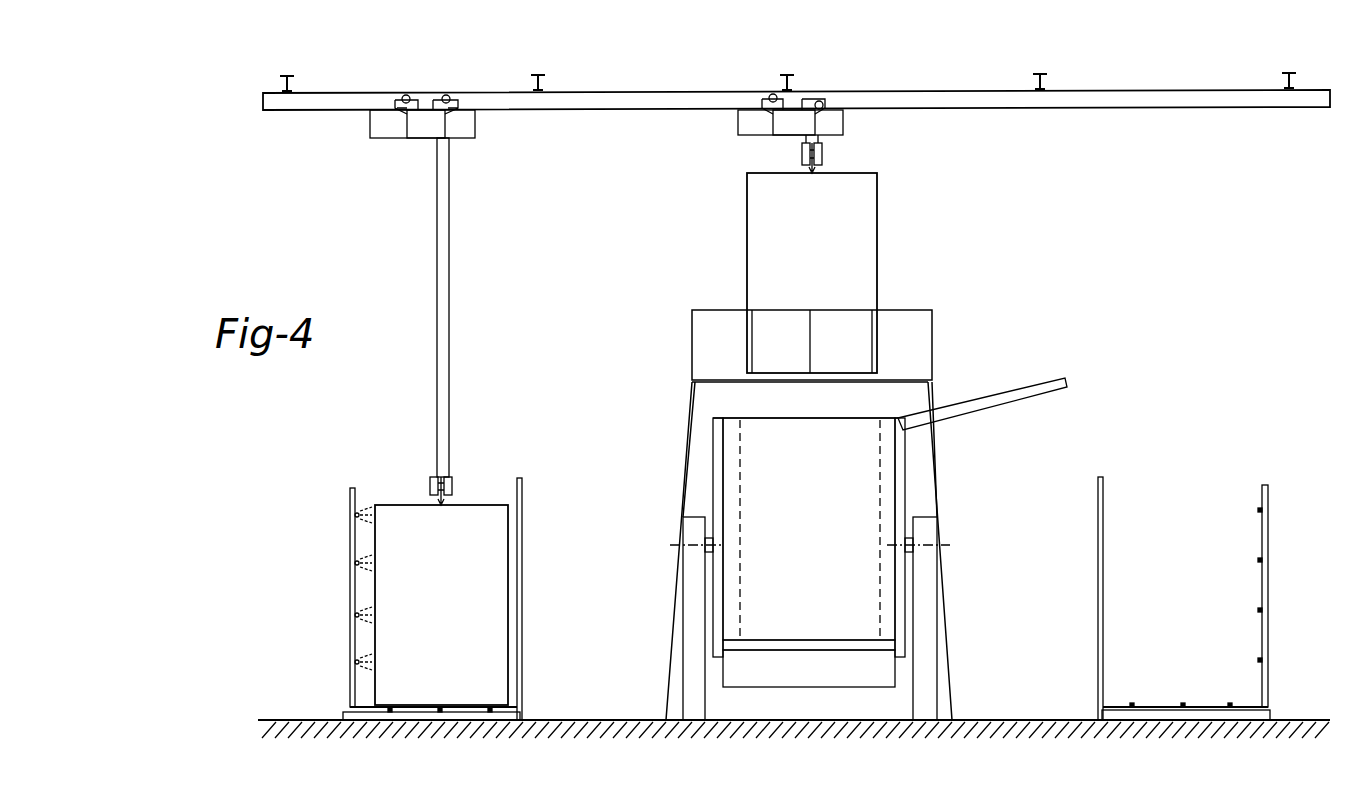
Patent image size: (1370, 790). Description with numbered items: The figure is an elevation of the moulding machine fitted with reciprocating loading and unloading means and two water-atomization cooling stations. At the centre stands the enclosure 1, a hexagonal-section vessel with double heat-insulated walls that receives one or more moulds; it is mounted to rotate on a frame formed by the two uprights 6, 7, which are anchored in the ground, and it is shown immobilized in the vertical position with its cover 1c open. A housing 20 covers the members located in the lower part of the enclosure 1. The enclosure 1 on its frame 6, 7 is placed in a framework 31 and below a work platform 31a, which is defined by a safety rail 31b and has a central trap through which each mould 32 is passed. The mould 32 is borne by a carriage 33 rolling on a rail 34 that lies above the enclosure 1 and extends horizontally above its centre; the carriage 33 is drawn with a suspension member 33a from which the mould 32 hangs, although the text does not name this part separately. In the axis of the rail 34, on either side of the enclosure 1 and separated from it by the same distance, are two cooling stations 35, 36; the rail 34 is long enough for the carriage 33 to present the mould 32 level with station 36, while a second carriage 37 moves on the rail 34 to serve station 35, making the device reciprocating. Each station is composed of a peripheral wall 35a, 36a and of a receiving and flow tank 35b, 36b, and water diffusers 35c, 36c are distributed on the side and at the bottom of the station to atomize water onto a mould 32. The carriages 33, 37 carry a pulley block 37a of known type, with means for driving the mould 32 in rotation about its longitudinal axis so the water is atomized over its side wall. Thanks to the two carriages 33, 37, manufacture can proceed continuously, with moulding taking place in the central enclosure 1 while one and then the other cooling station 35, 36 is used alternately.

The enclosure 1 is at (815, 522).
The cover 1c is at (985, 406).
The upright 6 is at (677, 613).
The upright 7 is at (933, 596).
The housing 20 is at (778, 672).
The framework 31 is at (935, 477).
The work platform 31a is at (928, 382).
The safety rail 31b is at (932, 312).
The mould 32 is at (460, 505).
The carriage 33 is at (830, 125).
The hook 33a is at (822, 155).
The rail 34 is at (886, 98).
The cooling station 35 is at (522, 596).
The peripheral wall 35a is at (522, 541).
The receiving and flow tank 35b is at (500, 713).
The water diffusers 35c is at (357, 563).
The cooling station 36 is at (1268, 593).
The peripheral wall 36a is at (1098, 537).
The receiving and flow tank 36b is at (1270, 715).
The water diffusers 36c is at (1230, 704).
The second carriage 37 is at (462, 142).
The pulley block 37a is at (452, 480).